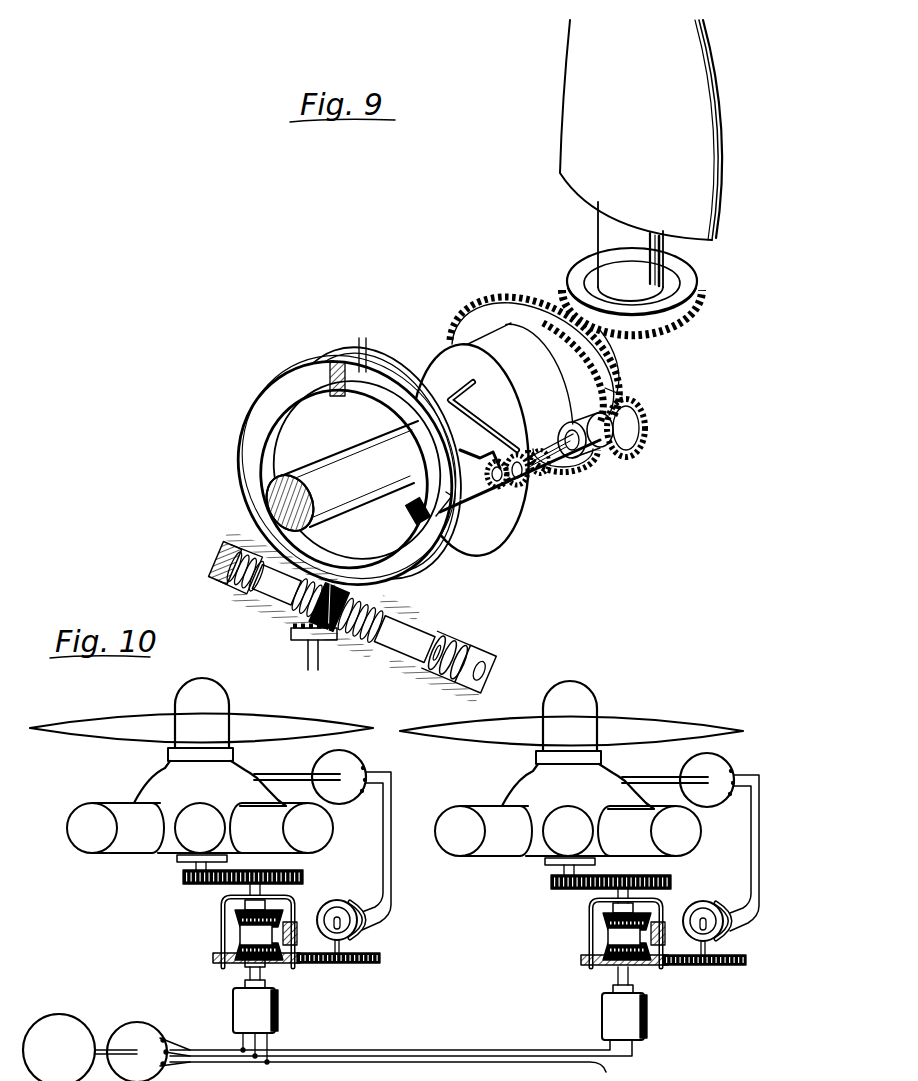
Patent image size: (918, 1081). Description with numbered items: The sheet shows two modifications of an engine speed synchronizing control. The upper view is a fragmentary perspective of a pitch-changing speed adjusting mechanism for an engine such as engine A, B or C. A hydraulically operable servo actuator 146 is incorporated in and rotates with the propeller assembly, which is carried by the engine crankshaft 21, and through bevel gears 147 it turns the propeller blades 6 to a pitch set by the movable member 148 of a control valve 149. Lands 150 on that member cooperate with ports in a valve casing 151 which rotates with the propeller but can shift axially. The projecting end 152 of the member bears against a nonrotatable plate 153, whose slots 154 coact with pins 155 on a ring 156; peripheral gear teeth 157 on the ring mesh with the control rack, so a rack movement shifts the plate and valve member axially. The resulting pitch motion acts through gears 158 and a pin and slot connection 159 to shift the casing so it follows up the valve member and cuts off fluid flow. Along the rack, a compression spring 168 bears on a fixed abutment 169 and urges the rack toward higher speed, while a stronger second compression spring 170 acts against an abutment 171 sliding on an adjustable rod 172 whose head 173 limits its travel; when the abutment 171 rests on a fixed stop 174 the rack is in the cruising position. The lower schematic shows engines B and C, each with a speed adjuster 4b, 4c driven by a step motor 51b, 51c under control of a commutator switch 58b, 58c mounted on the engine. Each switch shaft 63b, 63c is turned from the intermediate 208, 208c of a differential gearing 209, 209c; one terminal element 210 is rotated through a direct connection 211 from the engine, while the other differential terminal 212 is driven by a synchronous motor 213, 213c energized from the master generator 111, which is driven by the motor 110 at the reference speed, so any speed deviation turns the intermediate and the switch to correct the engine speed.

In FIG. 9, the propeller blades 6 is at (560, 144).
In FIG. 9, the engine crankshaft 21 is at (268, 504).
In FIG. 9, the servo actuator 146 is at (442, 350).
In FIG. 9, the bevel gears 147 is at (630, 350).
In FIG. 9, the movable member 148 is at (492, 487).
In FIG. 9, the control valve 149 is at (546, 510).
In FIG. 9, the lands 150 is at (520, 486).
In FIG. 9, the valve casing 151 is at (580, 478).
In FIG. 9, the projecting end 152 is at (478, 520).
In FIG. 9, the nonrotatable plate 153 is at (383, 385).
In FIG. 9, the slots 154 is at (412, 510).
In FIG. 9, the pins 155 is at (434, 506).
In FIG. 9, the ring 156 is at (285, 372).
In FIG. 9, the peripheral gear teeth 157 is at (388, 600).
In FIG. 9, the gears 158 is at (625, 392).
In FIG. 9, the pin and slot connection 159 is at (602, 446).
In FIG. 9, the compression spring 168 is at (217, 578).
In FIG. 9, the fixed abutment 169 is at (222, 552).
In FIG. 9, the second compression spring 170 is at (440, 645).
In FIG. 9, the abutment 171 is at (446, 672).
In FIG. 9, the adjustable rod 172 is at (430, 670).
In FIG. 9, the head 173 is at (462, 650).
In FIG. 9, the fixed stop 174 is at (472, 660).
In FIG. 9, the engine A is at (268, 606).
In FIG. 10, the engine B is at (135, 852).
In FIG. 10, the engine C is at (503, 856).
In FIG. 10, the engine speed adjuster 4b is at (283, 777).
In FIG. 10, the engine speed adjuster 4c is at (655, 780).
In FIG. 10, the step motor 51b is at (361, 769).
In FIG. 10, the step motor 51c is at (728, 771).
In FIG. 10, the commutator switch 58b is at (338, 898).
In FIG. 10, the commutator switch 58c is at (706, 898).
In FIG. 10, the switch shaft 63b is at (350, 950).
In FIG. 10, the switch shaft 63c is at (716, 950).
In FIG. 10, the motor 110 is at (64, 1025).
In FIG. 10, the generator 111 is at (147, 1032).
In FIG. 10, the intermediate 208 is at (288, 963).
In FIG. 10, the intermediate 208c is at (653, 967).
In FIG. 10, the differential gearing 209 is at (222, 933).
In FIG. 10, the differential gearing 209c is at (590, 938).
In FIG. 10, the terminal element 210 is at (236, 921).
In FIG. 10, the direct connection 211 is at (222, 888).
In FIG. 10, the differential terminal 212 is at (222, 950).
In FIG. 10, the synchronous motor 213 is at (276, 1012).
In FIG. 10, the synchronous motor 213c is at (646, 1017).